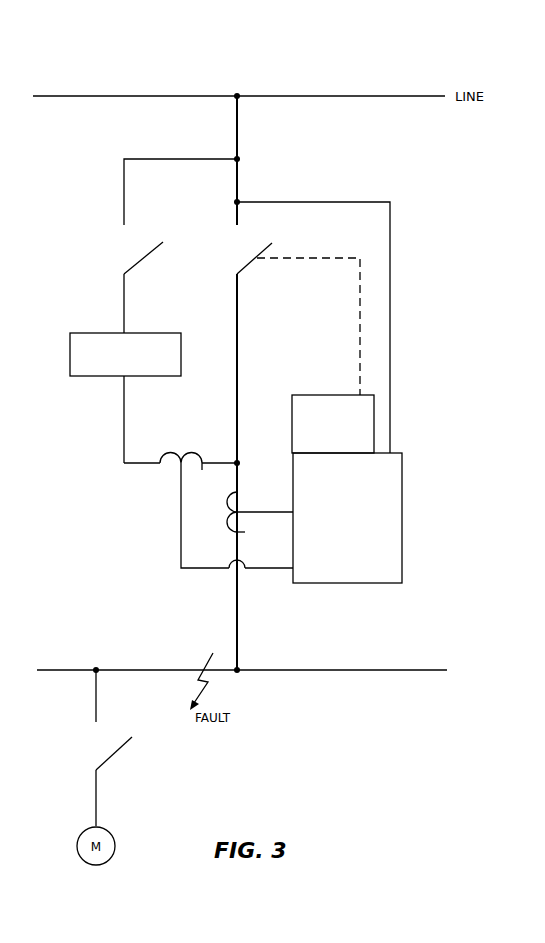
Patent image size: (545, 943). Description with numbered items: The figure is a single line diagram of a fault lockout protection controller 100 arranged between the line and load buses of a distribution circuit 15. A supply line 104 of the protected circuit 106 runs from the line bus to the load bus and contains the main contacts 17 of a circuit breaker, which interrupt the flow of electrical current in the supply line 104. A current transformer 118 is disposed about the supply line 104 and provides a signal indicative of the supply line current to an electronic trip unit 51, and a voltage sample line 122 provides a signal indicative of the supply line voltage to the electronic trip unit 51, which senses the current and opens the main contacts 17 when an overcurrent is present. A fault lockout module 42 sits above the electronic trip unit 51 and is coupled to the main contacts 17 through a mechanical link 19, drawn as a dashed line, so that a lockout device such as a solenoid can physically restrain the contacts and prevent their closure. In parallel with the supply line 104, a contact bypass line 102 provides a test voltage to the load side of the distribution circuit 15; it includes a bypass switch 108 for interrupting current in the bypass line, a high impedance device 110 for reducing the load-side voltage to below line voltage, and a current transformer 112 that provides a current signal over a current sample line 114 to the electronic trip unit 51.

The distribution circuit 15 is at (461, 64).
The main contacts 17 is at (273, 243).
The mechanical link 19 is at (359, 285).
The fault lockout module 42 is at (305, 395).
The electronic trip unit 51 is at (406, 491).
The fault lockout protection controller 100 is at (452, 330).
The contact bypass line 102 is at (124, 203).
The supply line 104 is at (238, 137).
The protected circuit 106 is at (378, 668).
The bypass switch 108 is at (143, 258).
The high impedance device 110 is at (70, 350).
The current transformer 112 is at (160, 470).
The current sample line 114 is at (184, 570).
The current transformer 118 is at (242, 492).
The voltage sample line 122 is at (391, 253).